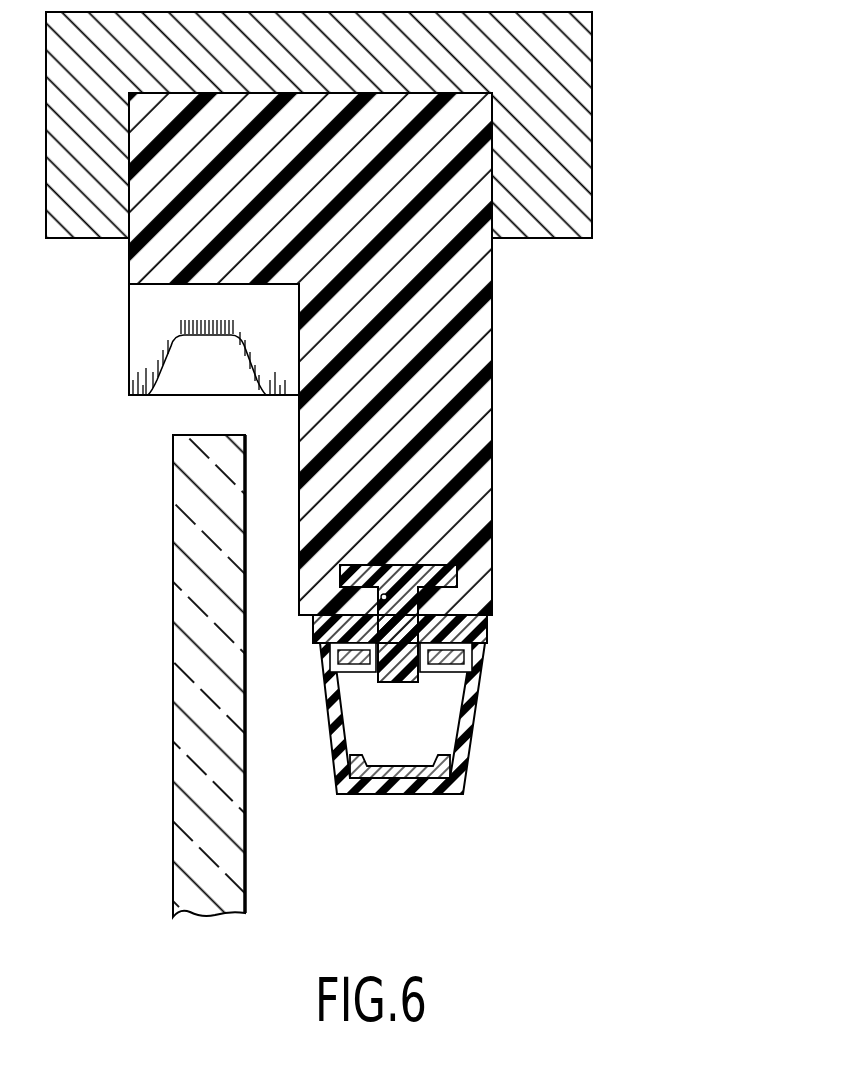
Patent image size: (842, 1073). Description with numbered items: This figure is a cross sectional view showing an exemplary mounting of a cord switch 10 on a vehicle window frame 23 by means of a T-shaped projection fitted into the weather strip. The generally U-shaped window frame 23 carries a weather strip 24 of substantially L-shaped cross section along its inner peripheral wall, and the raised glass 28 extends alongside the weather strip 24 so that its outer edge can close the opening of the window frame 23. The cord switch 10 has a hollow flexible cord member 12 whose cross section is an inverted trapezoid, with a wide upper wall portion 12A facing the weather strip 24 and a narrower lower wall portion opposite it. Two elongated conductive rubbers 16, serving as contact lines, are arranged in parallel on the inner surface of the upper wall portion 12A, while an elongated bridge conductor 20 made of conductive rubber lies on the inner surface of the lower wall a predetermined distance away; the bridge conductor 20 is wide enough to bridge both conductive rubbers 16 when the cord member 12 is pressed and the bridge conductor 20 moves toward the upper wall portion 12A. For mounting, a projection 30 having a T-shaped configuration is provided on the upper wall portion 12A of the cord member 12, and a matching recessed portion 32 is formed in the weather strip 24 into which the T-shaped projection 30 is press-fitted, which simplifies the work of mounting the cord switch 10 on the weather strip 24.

The cord switch 10 is at (447, 681).
The cord member 12 is at (467, 768).
The upper wall portion 12A is at (460, 615).
The conductive rubbers 16 is at (333, 650).
The bridge conductor 20 is at (417, 794).
The window frame 23 is at (592, 60).
The weather strip 24 is at (492, 322).
The raised glass 28 is at (182, 492).
The projection 30 is at (427, 565).
The recessed portion 32 is at (380, 598).